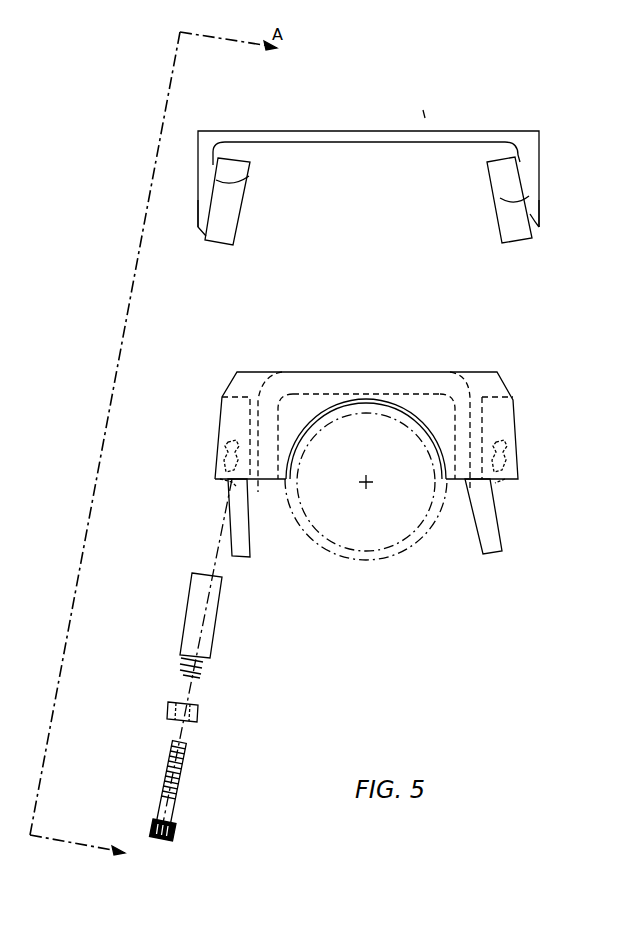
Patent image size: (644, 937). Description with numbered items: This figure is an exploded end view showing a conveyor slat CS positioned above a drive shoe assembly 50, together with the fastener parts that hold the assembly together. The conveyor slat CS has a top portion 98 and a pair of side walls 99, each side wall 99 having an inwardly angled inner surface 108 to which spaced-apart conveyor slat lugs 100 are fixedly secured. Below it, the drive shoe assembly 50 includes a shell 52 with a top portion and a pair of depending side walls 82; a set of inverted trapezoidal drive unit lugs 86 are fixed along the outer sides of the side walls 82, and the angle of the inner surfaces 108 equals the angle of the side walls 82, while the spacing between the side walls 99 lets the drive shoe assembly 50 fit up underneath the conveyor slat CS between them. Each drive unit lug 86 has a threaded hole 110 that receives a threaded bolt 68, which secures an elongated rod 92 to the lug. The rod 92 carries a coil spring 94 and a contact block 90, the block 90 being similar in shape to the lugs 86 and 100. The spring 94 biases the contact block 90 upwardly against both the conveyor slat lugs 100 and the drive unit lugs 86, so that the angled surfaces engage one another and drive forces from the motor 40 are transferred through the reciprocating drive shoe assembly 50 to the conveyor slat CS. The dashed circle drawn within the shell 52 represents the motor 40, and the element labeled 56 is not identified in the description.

The motor 40 is at (383, 562).
The drive shoe assembly 50 is at (514, 403).
The shell 52 is at (420, 385).
The side flange 56 is at (245, 385).
The threaded bolt 68 is at (178, 783).
The side walls 82 is at (255, 540).
The drive unit lugs 86 is at (212, 462).
The contact blocks 90 is at (208, 612).
The elongated rods 92 is at (200, 712).
The coil springs 94 is at (200, 668).
The top portion 98 is at (350, 140).
The side walls 99 is at (204, 202).
The conveyor slat lugs 100 is at (227, 222).
The inwardly angled inner surface 108 is at (249, 176).
The threaded holes 110 is at (222, 481).
The conveyor slat CS is at (417, 102).